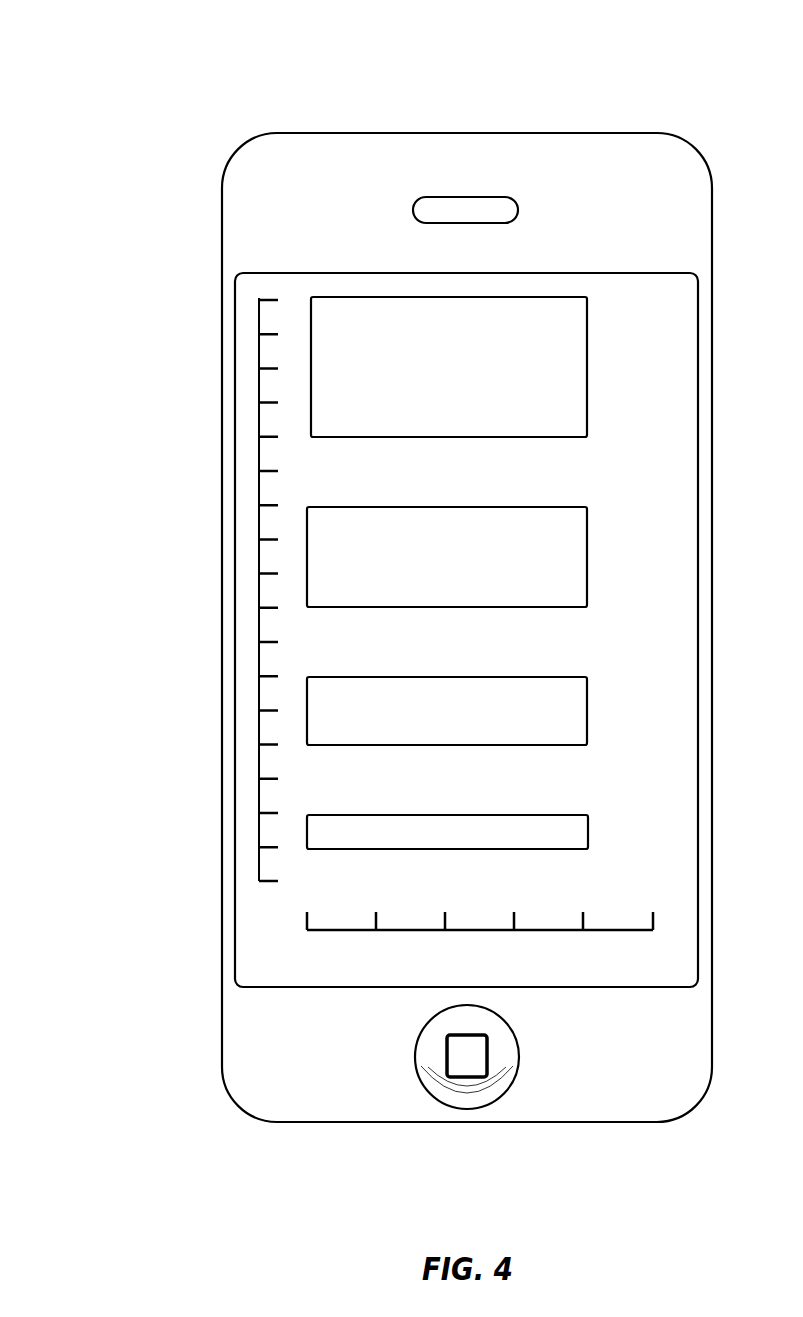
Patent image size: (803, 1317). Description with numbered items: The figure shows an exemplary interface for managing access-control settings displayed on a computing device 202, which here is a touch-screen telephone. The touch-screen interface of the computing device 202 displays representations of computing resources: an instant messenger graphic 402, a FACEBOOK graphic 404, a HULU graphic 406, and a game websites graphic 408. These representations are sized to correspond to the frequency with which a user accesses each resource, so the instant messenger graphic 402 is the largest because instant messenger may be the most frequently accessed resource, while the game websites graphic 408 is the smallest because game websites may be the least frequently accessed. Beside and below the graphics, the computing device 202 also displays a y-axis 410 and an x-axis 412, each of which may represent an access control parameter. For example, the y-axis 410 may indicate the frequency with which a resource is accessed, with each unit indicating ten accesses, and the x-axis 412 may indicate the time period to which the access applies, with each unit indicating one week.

The computing device 202 is at (133, 80).
The instant messenger graphic 402 is at (309, 420).
The FACEBOOK graphic 404 is at (308, 587).
The HULU graphic 406 is at (308, 740).
The game websites graphic 408 is at (308, 848).
The y-axis 410 is at (258, 300).
The x-axis 412 is at (308, 918).